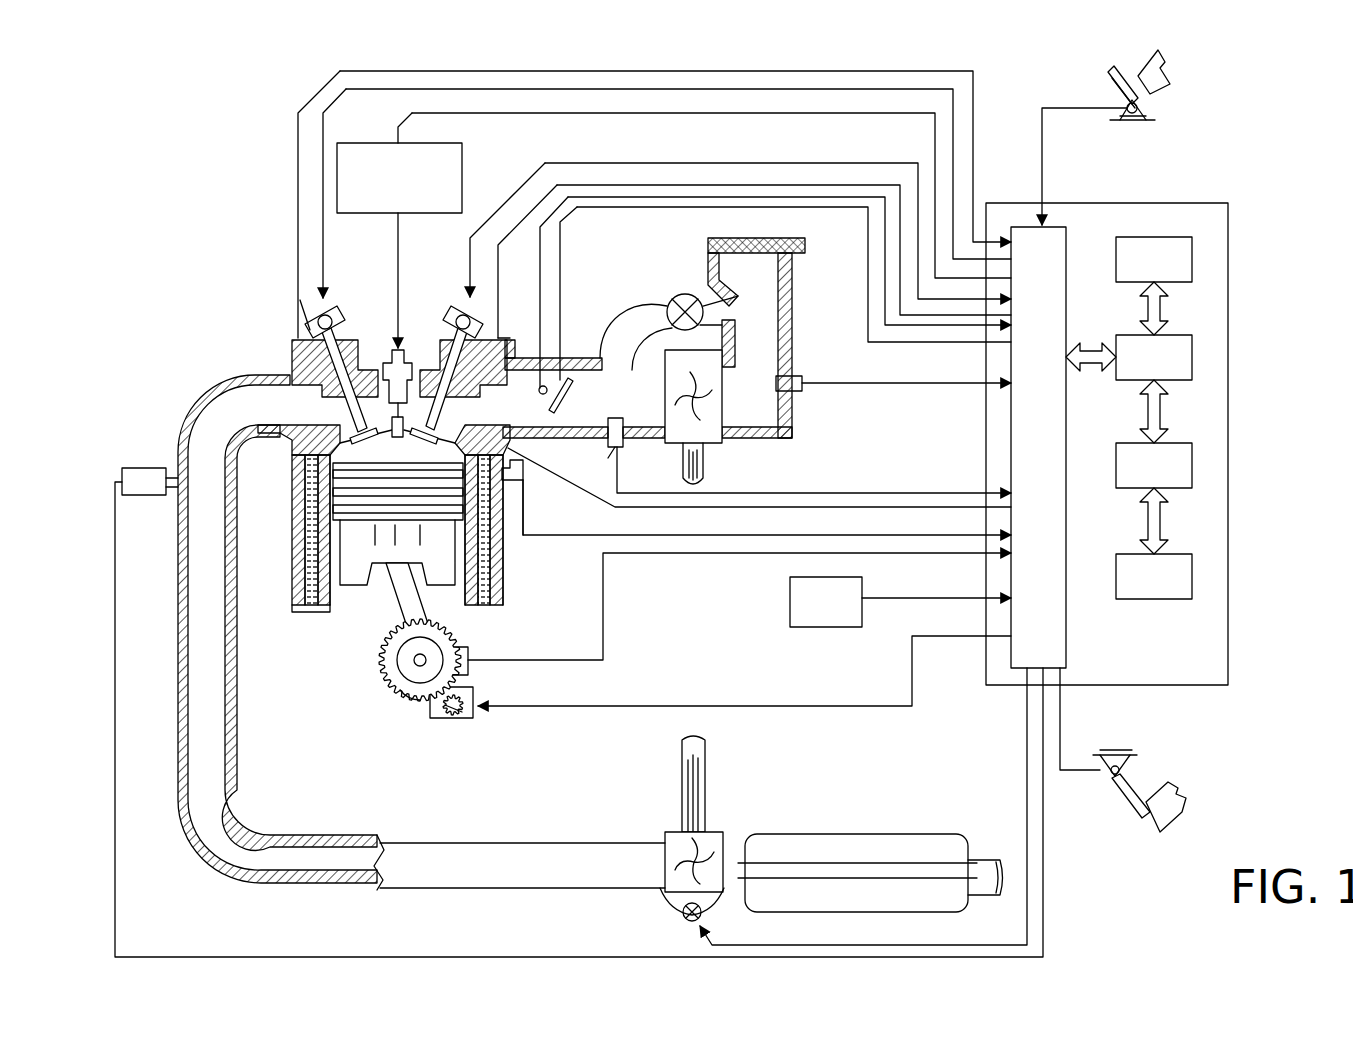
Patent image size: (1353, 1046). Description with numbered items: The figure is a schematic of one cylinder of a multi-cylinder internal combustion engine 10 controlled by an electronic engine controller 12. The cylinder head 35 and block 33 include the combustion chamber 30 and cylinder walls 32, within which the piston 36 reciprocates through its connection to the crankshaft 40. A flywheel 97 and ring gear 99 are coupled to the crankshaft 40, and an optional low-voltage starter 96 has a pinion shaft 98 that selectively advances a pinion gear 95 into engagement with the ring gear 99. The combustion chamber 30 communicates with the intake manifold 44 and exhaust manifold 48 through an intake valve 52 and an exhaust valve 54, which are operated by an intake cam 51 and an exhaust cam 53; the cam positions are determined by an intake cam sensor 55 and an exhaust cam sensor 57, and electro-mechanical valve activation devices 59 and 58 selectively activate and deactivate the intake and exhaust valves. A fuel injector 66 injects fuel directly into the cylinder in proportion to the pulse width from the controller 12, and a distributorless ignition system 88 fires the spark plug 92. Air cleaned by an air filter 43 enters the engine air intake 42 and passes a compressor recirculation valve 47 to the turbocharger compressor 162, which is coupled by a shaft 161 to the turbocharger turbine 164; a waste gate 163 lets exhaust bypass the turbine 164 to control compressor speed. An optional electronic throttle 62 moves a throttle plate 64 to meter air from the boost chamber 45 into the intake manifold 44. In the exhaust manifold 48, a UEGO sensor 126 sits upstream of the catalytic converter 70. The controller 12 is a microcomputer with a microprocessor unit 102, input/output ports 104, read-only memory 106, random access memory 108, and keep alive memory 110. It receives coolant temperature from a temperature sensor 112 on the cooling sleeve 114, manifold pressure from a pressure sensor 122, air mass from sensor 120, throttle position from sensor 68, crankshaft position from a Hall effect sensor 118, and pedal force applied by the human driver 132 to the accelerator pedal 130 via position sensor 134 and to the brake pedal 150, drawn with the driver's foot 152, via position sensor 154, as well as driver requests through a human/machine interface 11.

The internal combustion engine 10 is at (226, 288).
The human/machine interface 11 is at (826, 602).
The electronic engine controller 12 is at (1228, 205).
The combustion chamber 30 is at (325, 538).
The cylinder walls 32 is at (335, 610).
The block 33 is at (290, 494).
The cylinder head 35 is at (288, 336).
The piston 36 is at (380, 575).
The crankshaft 40 is at (400, 690).
The engine air intake 42 is at (688, 332).
The air filter 43 is at (775, 255).
The intake manifold 44 is at (536, 416).
The boost chamber 45 is at (640, 416).
The compressor recirculation valve 47 is at (674, 300).
The exhaust manifold 48 is at (270, 421).
The intake cam 51 is at (462, 306).
The intake valve 52 is at (440, 400).
The exhaust cam 53 is at (334, 310).
The exhaust valve 54 is at (340, 395).
The intake cam sensor 55 is at (480, 340).
The exhaust cam sensor 57 is at (316, 322).
The valve activation device 58 is at (340, 320).
The valve activation device 59 is at (455, 328).
The electronic throttle 62 is at (566, 398).
The throttle plate 64 is at (608, 427).
The fuel injector 66 is at (523, 476).
The throttle position sensor 68 is at (520, 368).
The catalytic converter 70 is at (790, 835).
The distributorless ignition system 88 is at (350, 143).
The spark plug 92 is at (402, 348).
The pinion gear 95 is at (455, 718).
The starter 96 is at (468, 715).
The flywheel 97 is at (393, 665).
The pinion shaft 98 is at (440, 715).
The ring gear 99 is at (406, 702).
The microprocessor unit 102 is at (1192, 356).
The input/output ports 104 is at (1066, 237).
The read-only memory 106 is at (1192, 258).
The random access memory 108 is at (1192, 465).
The keep alive memory 110 is at (1192, 575).
The temperature sensor 112 is at (541, 507).
The cooling sleeve 114 is at (487, 556).
The Hall effect sensor 118 is at (468, 650).
The air mass sensor 120 is at (800, 377).
The pressure sensor 122 is at (608, 452).
The UEGO sensor 126 is at (122, 470).
The accelerator pedal 130 is at (1112, 82).
The human driver 132 is at (1165, 70).
The position sensor 134 is at (1150, 112).
The brake pedal 150 is at (1142, 818).
The foot 152 is at (1172, 790).
The position sensor 154 is at (1107, 758).
The shaft 161 is at (683, 470).
The turbocharger compressor 162 is at (708, 432).
The waste gate 163 is at (685, 920).
The turbocharger turbine 164 is at (670, 832).